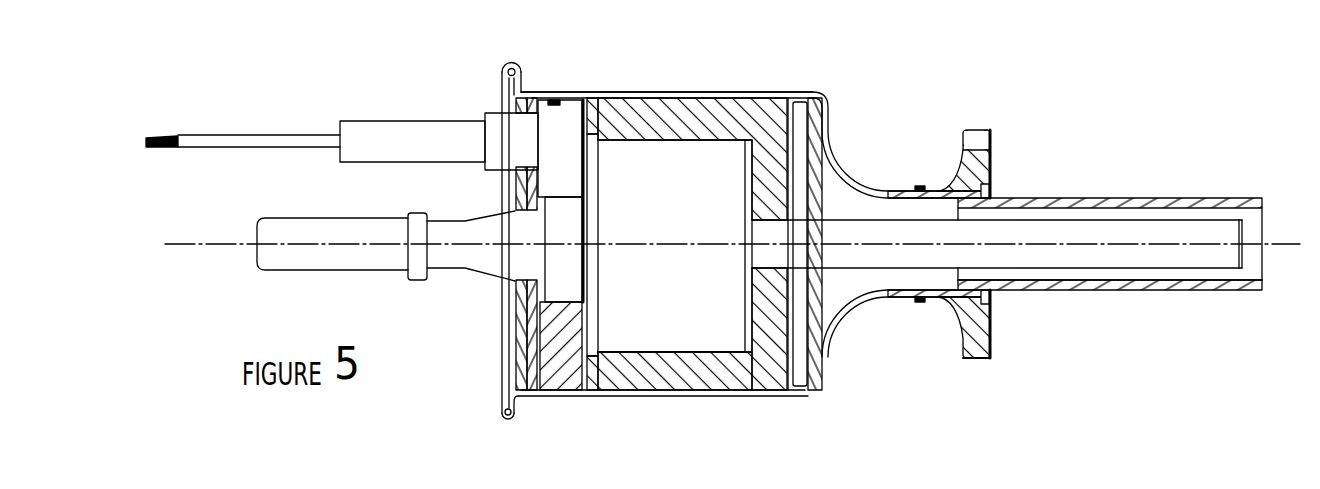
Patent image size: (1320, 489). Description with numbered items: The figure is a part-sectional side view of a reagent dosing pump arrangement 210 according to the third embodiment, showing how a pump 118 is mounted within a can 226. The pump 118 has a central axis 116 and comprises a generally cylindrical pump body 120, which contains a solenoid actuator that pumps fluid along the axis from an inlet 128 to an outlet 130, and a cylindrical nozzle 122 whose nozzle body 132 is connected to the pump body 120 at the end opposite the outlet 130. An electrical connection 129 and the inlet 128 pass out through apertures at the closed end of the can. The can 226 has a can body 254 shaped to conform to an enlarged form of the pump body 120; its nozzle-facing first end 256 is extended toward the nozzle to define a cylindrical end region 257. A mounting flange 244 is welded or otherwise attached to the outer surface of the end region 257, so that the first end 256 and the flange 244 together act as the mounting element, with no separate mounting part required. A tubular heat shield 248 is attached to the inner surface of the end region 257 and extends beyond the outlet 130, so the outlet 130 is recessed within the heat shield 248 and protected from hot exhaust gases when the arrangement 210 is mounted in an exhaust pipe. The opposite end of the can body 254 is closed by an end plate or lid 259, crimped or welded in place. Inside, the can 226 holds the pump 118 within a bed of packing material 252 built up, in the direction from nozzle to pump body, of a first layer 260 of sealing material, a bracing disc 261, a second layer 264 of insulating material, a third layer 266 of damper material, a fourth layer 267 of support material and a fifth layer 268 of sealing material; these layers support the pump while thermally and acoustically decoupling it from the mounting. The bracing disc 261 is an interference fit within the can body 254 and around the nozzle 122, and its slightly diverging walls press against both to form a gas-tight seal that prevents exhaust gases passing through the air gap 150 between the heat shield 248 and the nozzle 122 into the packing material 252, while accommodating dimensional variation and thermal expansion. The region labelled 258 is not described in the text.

The central axis 116 is at (218, 246).
The pump 118 is at (708, 166).
The pump body 120 is at (620, 160).
The cylindrical nozzle 122 is at (1049, 234).
The inlet 128 is at (347, 262).
The power supply or electrical connection 129 is at (380, 128).
The outlet 130 is at (1244, 255).
The nozzle body 132 is at (1117, 259).
The air gap 150 is at (1043, 277).
The dosing pump arrangement 210 is at (648, 56).
The can 226 is at (777, 90).
The mounting flange 244 is at (973, 352).
The tubular heat shield 248 is at (1193, 290).
The packing material 252 is at (655, 374).
The can body 254 is at (676, 396).
The nozzle-facing first end 256 is at (881, 190).
The cylindrical end region 257 is at (950, 298).
The shell bottom wall 258 is at (520, 422).
The end plate or lid 259 is at (505, 372).
The first layer of sealing material 260 is at (813, 380).
The bracing disc 261 is at (793, 396).
The second layer of insulating material 264 is at (722, 378).
The third layer of damper material 266 is at (564, 380).
The fourth layer of support material 267 is at (533, 343).
The fifth layer of sealing material 268 is at (520, 315).